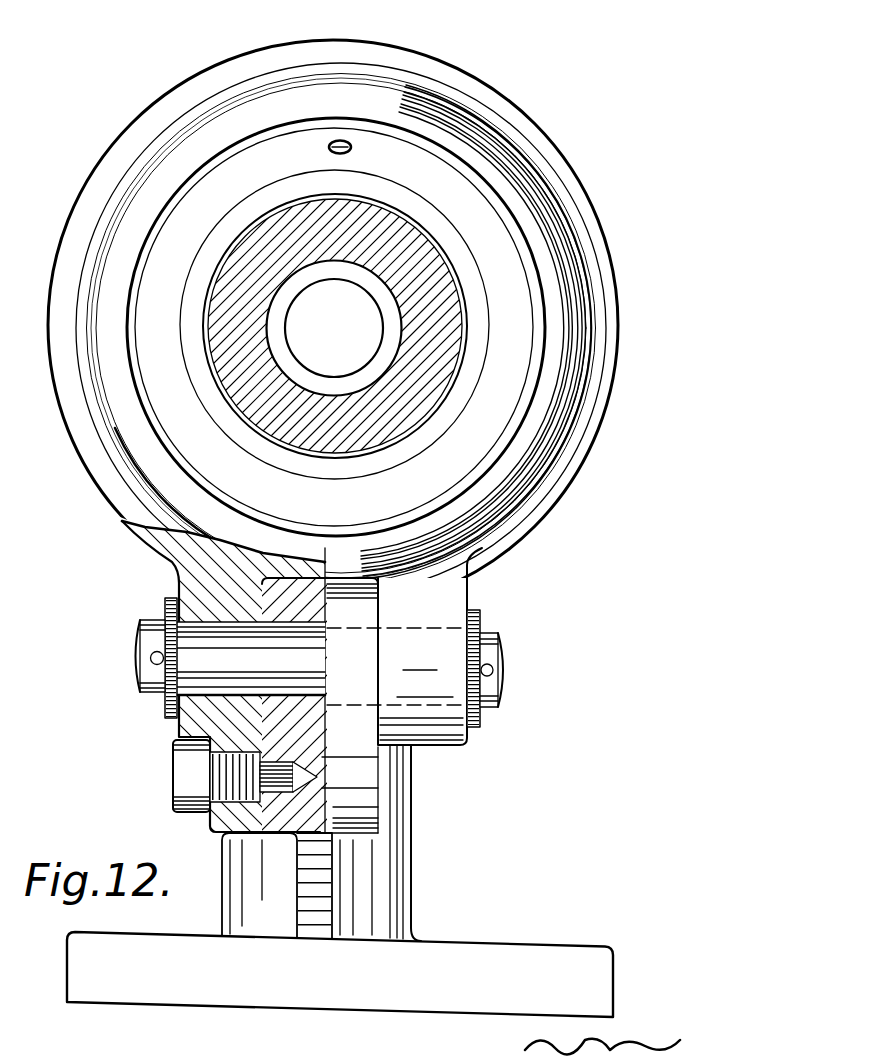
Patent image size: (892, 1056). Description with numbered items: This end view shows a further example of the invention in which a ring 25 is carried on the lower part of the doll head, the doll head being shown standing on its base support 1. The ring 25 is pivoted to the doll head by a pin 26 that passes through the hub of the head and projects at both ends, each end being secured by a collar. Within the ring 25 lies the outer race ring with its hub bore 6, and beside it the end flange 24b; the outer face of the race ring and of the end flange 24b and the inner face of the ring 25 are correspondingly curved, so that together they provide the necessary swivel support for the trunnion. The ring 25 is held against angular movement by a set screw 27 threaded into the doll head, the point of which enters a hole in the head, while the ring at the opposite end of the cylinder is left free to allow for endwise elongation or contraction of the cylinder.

The stand / bracket support 1 is at (478, 800).
The hub bushing 6 is at (408, 305).
The end flange 24b is at (380, 163).
The ring 25 is at (566, 168).
The pin 26 is at (138, 647).
The set screw 27 is at (172, 778).